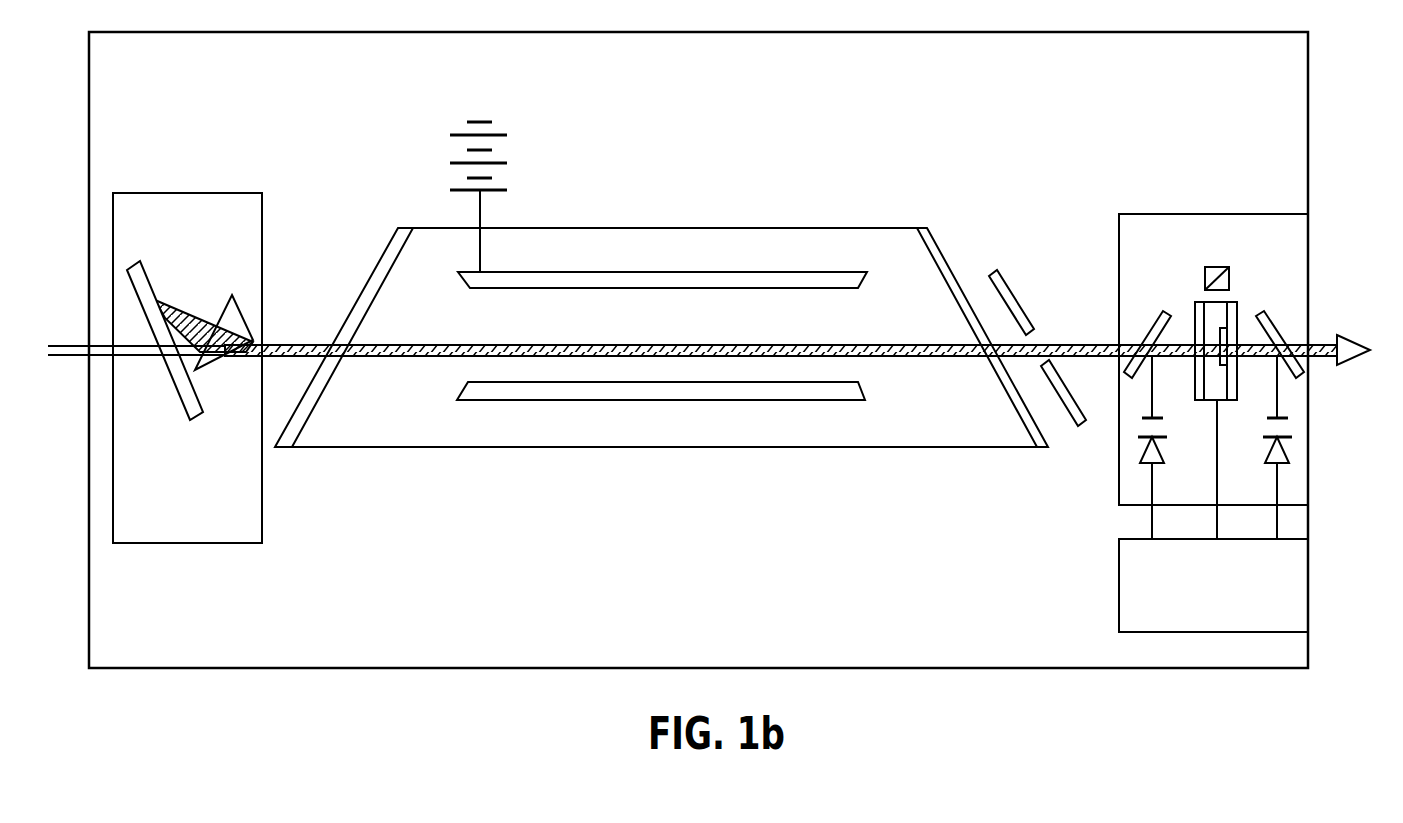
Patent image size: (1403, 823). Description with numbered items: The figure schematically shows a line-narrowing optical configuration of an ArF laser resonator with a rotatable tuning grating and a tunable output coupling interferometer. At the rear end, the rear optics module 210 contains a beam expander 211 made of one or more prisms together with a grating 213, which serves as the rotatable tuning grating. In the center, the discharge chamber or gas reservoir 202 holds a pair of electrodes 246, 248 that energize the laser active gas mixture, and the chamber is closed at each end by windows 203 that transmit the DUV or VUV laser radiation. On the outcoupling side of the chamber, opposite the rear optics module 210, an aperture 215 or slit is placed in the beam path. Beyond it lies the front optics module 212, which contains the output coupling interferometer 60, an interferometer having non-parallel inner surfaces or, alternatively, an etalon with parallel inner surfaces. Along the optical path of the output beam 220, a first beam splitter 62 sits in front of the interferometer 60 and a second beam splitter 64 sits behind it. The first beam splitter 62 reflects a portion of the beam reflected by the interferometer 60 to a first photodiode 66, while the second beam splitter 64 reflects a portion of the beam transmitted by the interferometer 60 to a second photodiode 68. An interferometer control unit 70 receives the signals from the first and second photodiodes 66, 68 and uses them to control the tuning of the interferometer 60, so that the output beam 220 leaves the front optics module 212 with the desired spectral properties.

The rear optics module 210 is at (187, 348).
The beam expander 211 is at (233, 290).
The grating 213 is at (172, 380).
The gas reservoir 202 is at (541, 226).
The windows 203 is at (297, 449).
The electrode 246 is at (862, 281).
The electrode 248 is at (862, 391).
The aperture 215 is at (997, 226).
The front optics module 212 is at (1213, 342).
The output coupling interferometer 60 is at (1214, 262).
The first beam splitter 62 is at (1141, 270).
The second beam splitter 64 is at (1288, 267).
The first photodiode 66 is at (1137, 469).
The second photodiode 68 is at (1294, 469).
The interferometer control unit 70 is at (1232, 590).
The output beam 220 is at (1323, 334).